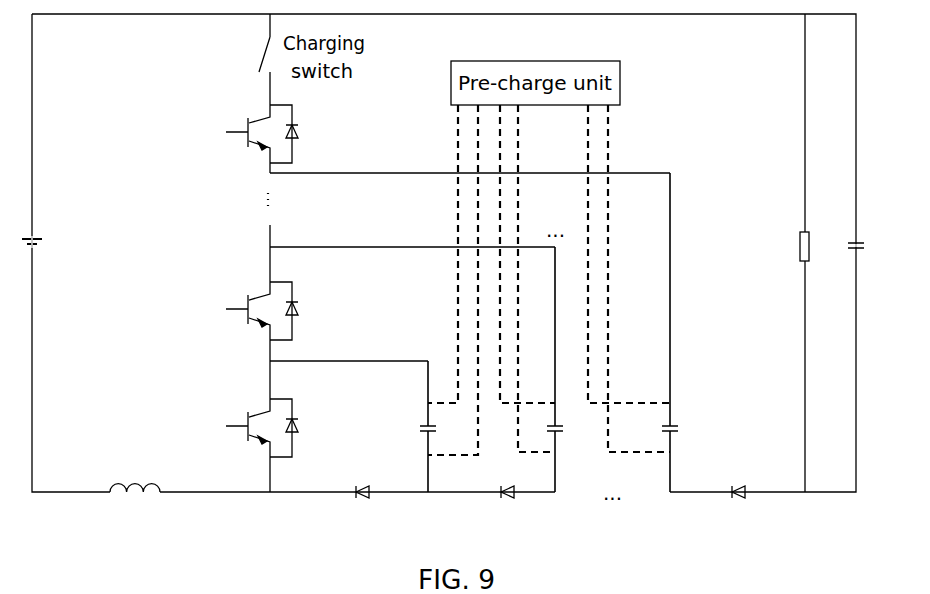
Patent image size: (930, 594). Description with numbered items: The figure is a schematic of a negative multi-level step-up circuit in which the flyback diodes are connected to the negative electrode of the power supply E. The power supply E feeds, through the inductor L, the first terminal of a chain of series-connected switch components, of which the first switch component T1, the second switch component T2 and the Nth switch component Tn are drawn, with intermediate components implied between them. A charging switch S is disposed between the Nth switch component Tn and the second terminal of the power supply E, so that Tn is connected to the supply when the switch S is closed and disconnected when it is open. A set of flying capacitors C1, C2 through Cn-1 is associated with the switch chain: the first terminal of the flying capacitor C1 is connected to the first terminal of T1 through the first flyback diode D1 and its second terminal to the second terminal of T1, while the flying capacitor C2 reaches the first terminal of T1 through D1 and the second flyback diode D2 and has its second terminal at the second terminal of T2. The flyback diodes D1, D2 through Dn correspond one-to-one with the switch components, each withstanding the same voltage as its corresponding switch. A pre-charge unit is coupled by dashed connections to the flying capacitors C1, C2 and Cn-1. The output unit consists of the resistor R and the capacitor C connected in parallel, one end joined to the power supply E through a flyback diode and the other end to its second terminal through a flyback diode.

The power supply E is at (42, 243).
The charging switch S is at (253, 59).
The Nth switch component Tn is at (250, 139).
The second switch component T2 is at (376, 293).
The first switch component T1 is at (247, 426).
The inductor L is at (135, 476).
The first flyback diode D1 is at (357, 506).
The second flyback diode D2 is at (498, 506).
The Nth flyback diode Dn is at (726, 506).
The flying capacitor C1 is at (409, 426).
The flying capacitor C2 is at (538, 369).
The flying capacitor Cn-1 is at (646, 332).
The resistor R is at (814, 253).
The capacitor C is at (867, 252).